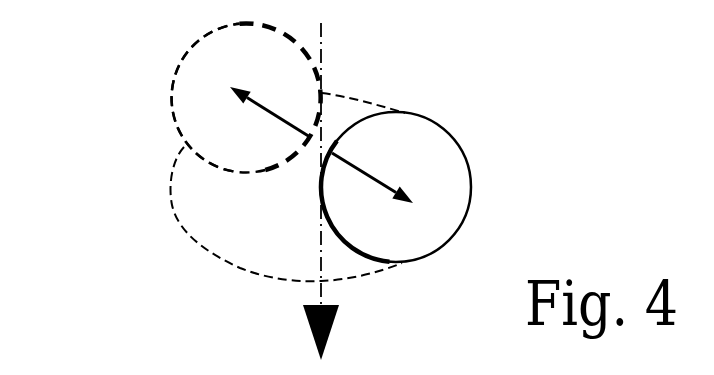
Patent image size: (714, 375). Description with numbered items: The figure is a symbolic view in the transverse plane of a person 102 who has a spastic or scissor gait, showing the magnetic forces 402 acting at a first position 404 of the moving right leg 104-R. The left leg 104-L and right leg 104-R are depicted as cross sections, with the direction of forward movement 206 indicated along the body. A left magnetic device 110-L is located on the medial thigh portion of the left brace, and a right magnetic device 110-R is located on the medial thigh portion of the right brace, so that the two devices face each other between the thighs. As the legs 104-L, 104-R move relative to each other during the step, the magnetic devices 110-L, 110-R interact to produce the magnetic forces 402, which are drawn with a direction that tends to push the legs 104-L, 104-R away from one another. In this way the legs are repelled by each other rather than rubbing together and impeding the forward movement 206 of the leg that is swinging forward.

The person 102 is at (246, 278).
The left leg 104-L is at (472, 187).
The right leg 104-R is at (170, 107).
The left magnetic device 110-L is at (322, 208).
The right magnetic device 110-R is at (324, 93).
The forward movement 206 is at (323, 293).
The magnetic forces 402 is at (387, 179).
The first position 404 is at (170, 94).